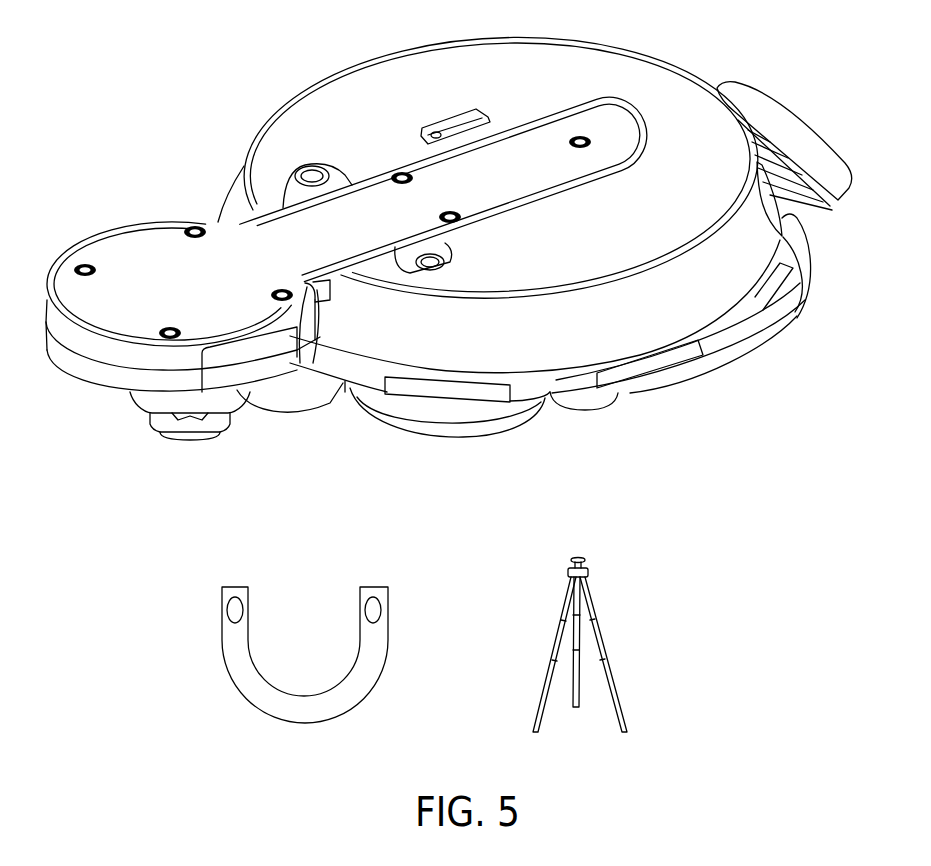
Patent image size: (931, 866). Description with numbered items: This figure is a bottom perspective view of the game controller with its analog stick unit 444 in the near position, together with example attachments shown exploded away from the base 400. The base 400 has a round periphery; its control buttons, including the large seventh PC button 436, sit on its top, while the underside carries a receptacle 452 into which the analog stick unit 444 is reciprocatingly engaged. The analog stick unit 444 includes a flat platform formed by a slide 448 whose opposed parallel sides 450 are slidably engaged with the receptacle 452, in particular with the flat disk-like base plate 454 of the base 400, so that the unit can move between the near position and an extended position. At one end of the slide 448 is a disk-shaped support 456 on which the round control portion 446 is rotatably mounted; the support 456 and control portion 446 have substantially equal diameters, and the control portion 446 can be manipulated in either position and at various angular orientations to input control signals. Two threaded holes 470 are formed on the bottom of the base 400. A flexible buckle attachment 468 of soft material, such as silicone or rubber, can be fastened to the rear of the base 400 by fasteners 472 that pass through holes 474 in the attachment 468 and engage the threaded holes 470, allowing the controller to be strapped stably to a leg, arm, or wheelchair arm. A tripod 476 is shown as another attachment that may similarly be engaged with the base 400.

The base 400 is at (673, 305).
The seventh PC button 436 is at (800, 307).
The analog stick unit 444 is at (146, 183).
The control portion 446 is at (103, 378).
The slide 448 is at (377, 195).
The opposed parallel sides 450 is at (492, 202).
The receptacle 452 is at (573, 190).
The base plate 454 is at (647, 85).
The disk-shaped support 456 is at (133, 250).
The buckle attachment 468 is at (299, 660).
The threaded holes 470 is at (418, 268).
The fasteners 472 is at (307, 174).
The holes 474 is at (230, 607).
The tripod 476 is at (605, 640).